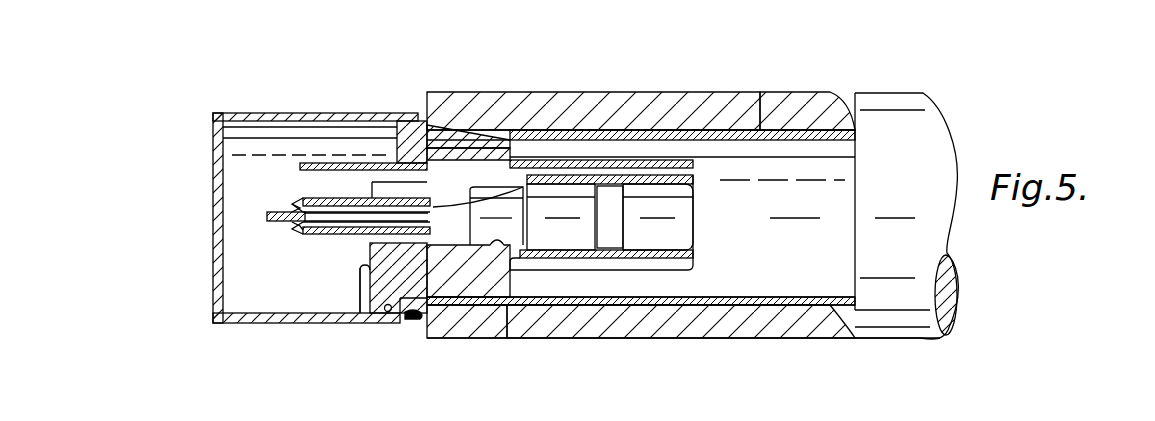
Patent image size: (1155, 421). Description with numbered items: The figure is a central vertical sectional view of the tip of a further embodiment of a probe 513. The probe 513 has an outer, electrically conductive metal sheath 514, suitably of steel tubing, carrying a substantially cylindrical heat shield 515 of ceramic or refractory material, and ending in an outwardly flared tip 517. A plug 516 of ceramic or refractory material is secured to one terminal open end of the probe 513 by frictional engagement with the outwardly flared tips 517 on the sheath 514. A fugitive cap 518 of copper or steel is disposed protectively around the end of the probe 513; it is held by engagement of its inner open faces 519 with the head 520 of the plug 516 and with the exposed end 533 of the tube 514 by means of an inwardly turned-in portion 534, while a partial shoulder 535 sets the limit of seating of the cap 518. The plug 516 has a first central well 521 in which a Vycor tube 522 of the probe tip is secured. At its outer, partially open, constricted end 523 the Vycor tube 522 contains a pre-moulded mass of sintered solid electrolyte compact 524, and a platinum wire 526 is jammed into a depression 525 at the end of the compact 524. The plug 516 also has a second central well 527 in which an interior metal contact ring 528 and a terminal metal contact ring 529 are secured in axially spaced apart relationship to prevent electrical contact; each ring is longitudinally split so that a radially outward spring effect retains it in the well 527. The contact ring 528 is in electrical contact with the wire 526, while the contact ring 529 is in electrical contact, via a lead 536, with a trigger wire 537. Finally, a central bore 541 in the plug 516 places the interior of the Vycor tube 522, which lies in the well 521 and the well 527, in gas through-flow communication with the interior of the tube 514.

The probe 513 is at (958, 144).
The sheath 514 is at (750, 132).
The heat shield 515 is at (648, 124).
The plug 516 is at (468, 142).
The outwardly flared tip 517 is at (445, 128).
The fugitive cap 518 is at (232, 325).
The inner open faces 519 is at (388, 312).
The head 520 is at (362, 280).
The first central well 521 is at (370, 200).
The Vycor tube 522 is at (360, 268).
The constricted end 523 is at (297, 206).
The solid electrolyte compact 524 is at (290, 222).
The depression 525 is at (297, 226).
The platinum wire 526 is at (357, 212).
The second central well 527 is at (495, 240).
The interior metal contact ring 528 is at (563, 250).
The terminal metal contact ring 529 is at (650, 245).
The exposed end 533 is at (403, 127).
The inwardly turned-in portion 534 is at (408, 314).
The partial shoulder 535 is at (373, 285).
The lead 536 is at (560, 160).
The trigger wire 537 is at (310, 163).
The central bore 541 is at (463, 232).